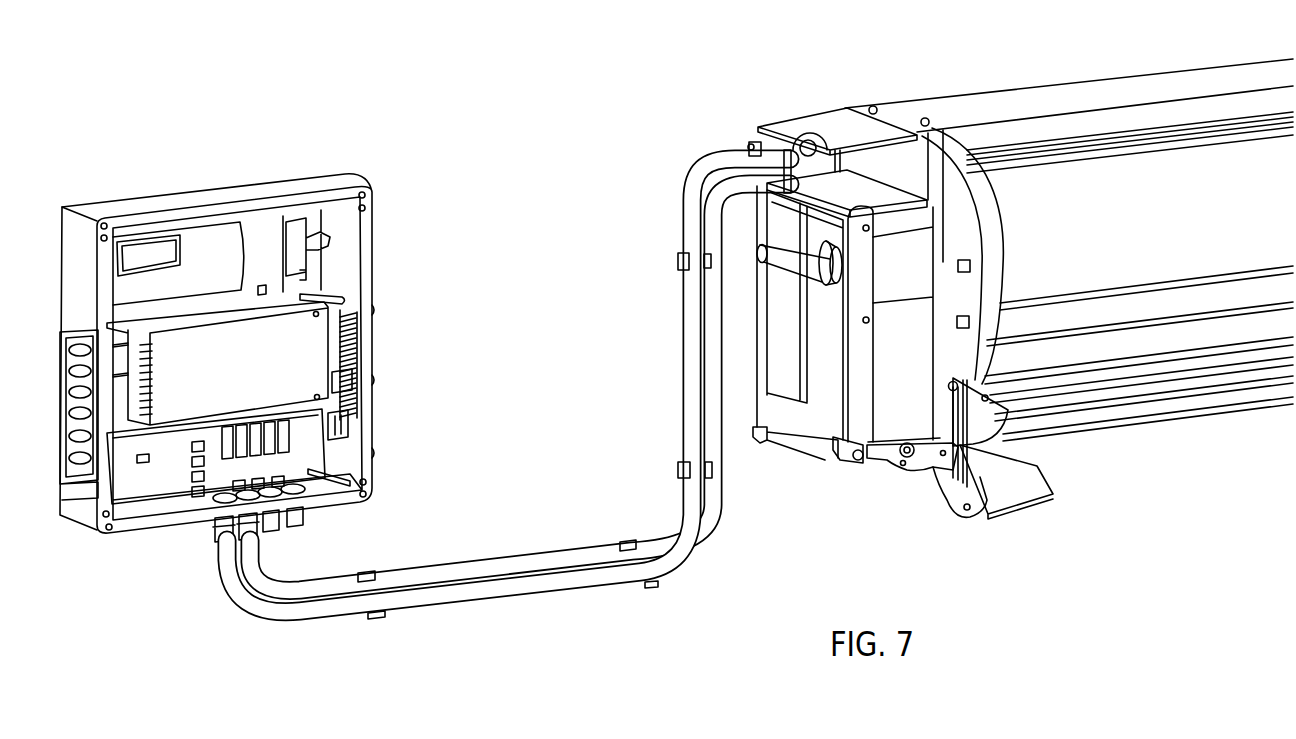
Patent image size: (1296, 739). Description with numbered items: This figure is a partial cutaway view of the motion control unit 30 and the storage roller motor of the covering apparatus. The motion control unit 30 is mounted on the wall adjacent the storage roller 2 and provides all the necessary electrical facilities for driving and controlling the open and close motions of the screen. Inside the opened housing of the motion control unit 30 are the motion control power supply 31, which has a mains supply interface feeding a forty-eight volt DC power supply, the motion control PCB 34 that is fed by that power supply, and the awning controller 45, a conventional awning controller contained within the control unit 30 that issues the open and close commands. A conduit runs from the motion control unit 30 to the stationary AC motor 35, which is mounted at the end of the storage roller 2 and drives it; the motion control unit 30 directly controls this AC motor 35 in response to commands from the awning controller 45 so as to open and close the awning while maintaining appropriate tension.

The storage roller 2 is at (962, 92).
The motion control unit 30 is at (241, 332).
The motion control power supply 31 is at (313, 352).
The motion control PCB 34 is at (153, 487).
The stationary AC motor 35 is at (815, 422).
The awning controller 45 is at (198, 235).